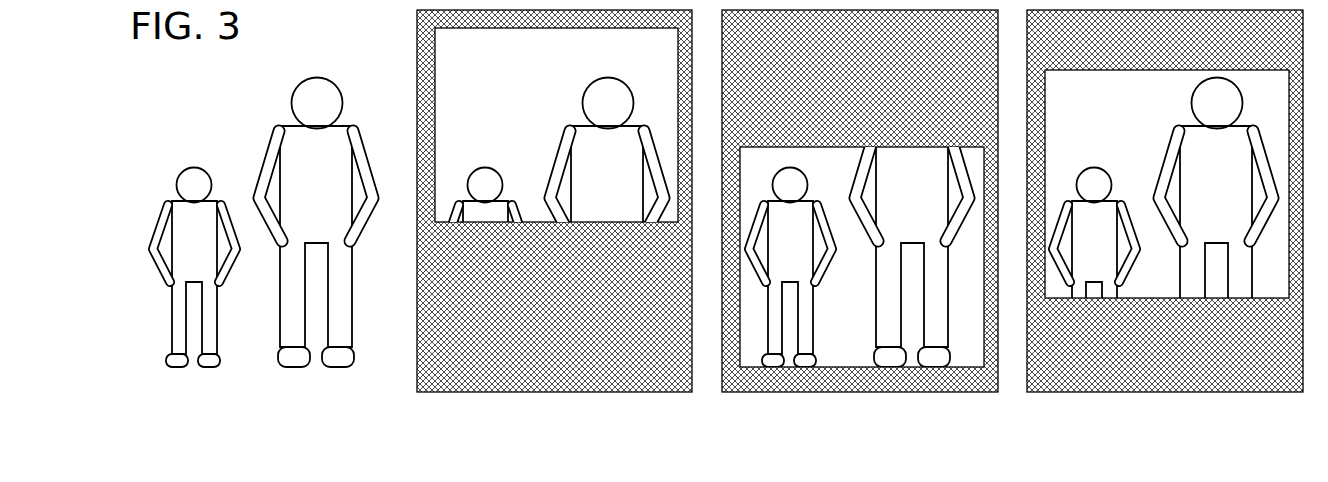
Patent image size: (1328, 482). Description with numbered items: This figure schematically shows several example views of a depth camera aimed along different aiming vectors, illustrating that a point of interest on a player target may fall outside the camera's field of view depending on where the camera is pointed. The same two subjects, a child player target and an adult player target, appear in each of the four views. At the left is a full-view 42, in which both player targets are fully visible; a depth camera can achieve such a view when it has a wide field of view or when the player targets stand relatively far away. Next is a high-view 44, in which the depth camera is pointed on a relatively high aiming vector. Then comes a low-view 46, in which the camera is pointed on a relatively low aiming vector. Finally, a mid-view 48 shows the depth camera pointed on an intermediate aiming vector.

The full-view 42 is at (263, 251).
The high-view 44 is at (554, 221).
The low-view 46 is at (860, 221).
The mid-view 48 is at (1165, 221).